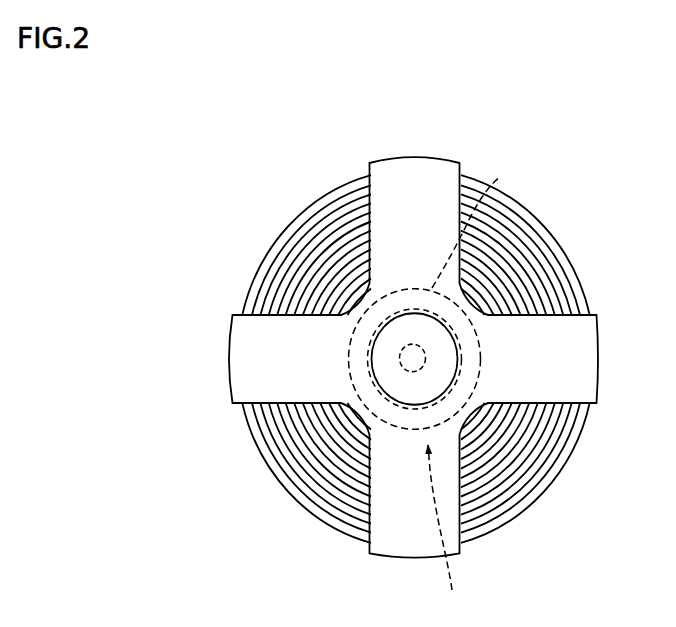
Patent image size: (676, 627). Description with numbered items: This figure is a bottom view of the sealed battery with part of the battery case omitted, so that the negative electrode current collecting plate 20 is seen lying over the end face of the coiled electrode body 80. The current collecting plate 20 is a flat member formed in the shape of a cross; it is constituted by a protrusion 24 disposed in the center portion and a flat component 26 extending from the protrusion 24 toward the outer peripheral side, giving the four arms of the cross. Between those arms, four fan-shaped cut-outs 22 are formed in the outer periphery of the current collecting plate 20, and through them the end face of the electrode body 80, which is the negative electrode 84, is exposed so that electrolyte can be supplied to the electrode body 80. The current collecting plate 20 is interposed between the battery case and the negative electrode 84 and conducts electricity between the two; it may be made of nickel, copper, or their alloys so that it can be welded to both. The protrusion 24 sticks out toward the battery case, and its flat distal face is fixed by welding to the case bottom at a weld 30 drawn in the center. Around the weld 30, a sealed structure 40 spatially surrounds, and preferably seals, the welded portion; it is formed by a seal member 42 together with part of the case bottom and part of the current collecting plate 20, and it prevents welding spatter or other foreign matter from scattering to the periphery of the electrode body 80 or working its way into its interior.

The negative electrode current collecting plate 20 is at (440, 157).
The cut-outs 22 is at (363, 208).
The protrusion 24 is at (415, 359).
The flat component 26 is at (413, 357).
The weld 30 is at (413, 358).
The sealed structure 40 is at (446, 530).
The seal member 42 is at (471, 217).
The electrode body 80 is at (415, 359).
The negative electrode 84 is at (415, 359).